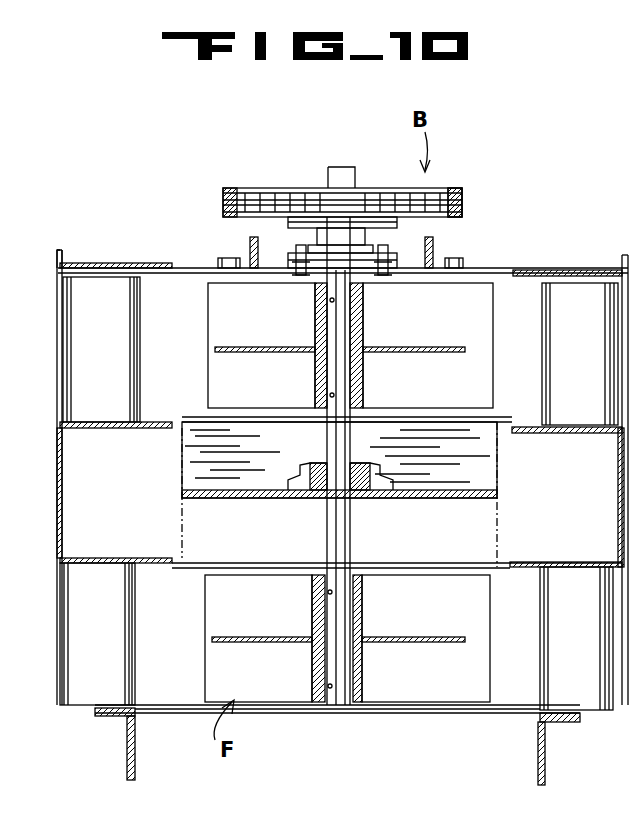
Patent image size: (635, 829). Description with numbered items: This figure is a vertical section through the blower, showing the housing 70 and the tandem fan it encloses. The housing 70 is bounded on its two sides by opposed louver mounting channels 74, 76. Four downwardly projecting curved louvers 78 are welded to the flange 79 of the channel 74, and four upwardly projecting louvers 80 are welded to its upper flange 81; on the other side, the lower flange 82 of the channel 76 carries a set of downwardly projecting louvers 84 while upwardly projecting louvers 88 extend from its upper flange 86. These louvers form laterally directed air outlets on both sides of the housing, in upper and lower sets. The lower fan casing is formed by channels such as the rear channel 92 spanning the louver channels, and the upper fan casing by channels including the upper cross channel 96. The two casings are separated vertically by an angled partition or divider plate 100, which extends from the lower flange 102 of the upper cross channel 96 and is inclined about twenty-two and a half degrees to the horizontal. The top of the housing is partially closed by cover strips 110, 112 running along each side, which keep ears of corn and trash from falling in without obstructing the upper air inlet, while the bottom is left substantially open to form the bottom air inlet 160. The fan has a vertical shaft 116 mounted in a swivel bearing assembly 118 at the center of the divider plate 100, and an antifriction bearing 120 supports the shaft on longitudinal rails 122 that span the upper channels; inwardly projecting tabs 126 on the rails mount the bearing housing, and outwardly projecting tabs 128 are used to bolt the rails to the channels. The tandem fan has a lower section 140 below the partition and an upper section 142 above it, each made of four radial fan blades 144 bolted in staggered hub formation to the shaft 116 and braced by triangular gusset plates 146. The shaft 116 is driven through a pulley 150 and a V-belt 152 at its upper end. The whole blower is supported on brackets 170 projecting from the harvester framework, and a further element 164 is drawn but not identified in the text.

The housing 70 is at (130, 258).
The side louver mounting channel 74 is at (57, 492).
The side louver mounting channel 76 is at (618, 492).
The downwardly projecting louvers 78 is at (70, 610).
The flange 79 is at (130, 558).
The upwardly projecting louvers 80 is at (70, 327).
The upper flange 81 is at (147, 428).
The lower flange 82 is at (528, 562).
The downwardly projecting louvers 84 is at (552, 643).
The upper flange 86 is at (592, 433).
The upwardly projecting louvers 88 is at (555, 376).
The rear channel 92 is at (160, 714).
The upper cross channel 96 is at (185, 384).
The angled partition 100 is at (183, 474).
The lower flange 102 is at (175, 418).
The cover strip 110 is at (66, 262).
The cover strip 112 is at (568, 270).
The vertical shaft 116 is at (345, 335).
The swivel bearing assembly 118 is at (298, 470).
The antifriction bearing 120 is at (318, 270).
The longitudinal rails 122 is at (249, 240).
The inwardly projecting tabs 126 is at (268, 277).
The outwardly projecting tabs 128 is at (212, 262).
The lower section 140 is at (440, 702).
The upper section 142 is at (280, 408).
The radial fan blades 144 is at (250, 392).
The triangular gusset plates 146 is at (213, 350).
The pulley 150 is at (282, 190).
The V-belt 152 is at (462, 200).
The bottom air inlet 160 is at (283, 714).
The top plate 164 is at (205, 283).
The brackets 170 is at (127, 745).